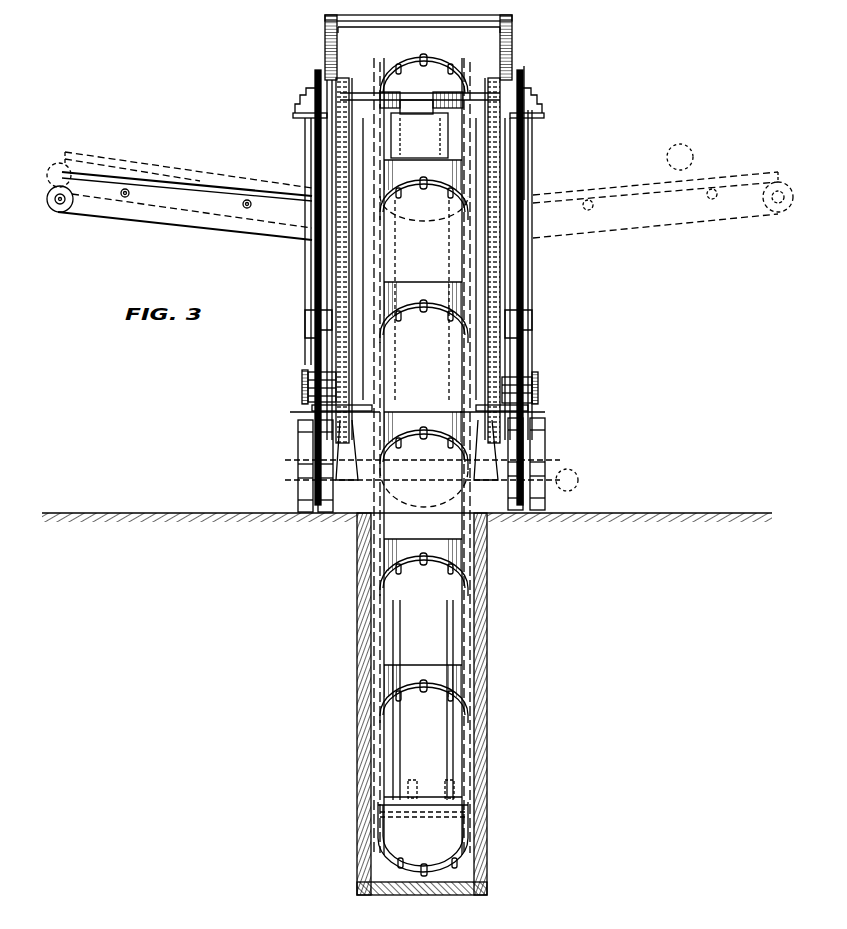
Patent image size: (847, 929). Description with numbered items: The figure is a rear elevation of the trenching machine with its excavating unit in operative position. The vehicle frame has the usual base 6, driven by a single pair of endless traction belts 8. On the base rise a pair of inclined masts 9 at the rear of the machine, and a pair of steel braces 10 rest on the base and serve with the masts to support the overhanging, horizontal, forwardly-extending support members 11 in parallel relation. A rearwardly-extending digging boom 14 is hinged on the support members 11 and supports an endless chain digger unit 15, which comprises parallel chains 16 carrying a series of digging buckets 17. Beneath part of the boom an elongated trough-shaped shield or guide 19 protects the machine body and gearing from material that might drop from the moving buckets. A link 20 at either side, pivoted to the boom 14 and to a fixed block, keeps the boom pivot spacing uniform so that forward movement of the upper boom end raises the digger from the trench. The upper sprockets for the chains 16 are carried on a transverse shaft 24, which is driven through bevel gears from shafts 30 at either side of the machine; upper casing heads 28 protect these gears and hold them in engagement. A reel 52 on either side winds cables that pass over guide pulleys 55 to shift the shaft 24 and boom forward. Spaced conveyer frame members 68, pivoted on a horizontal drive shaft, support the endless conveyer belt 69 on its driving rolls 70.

The base 6 is at (545, 481).
The endless traction belts 8 is at (546, 450).
The inclined masts 9 is at (497, 372).
The steel braces 10 is at (332, 280).
The support members 11 is at (325, 42).
The digging boom 14 is at (445, 735).
The endless chain digger unit 15 is at (475, 598).
The chains 16 is at (375, 620).
The digging buckets 17 is at (470, 557).
The shield or guide 19 is at (470, 282).
The link 20 is at (315, 410).
The transverse shaft 24 is at (420, 96).
The upper casing heads 28 is at (532, 102).
The shafts 30 is at (530, 160).
The reel 52 is at (538, 385).
The guide pulleys 55 is at (526, 78).
The conveyer frame members 68 is at (165, 195).
The conveyer belt 69 is at (170, 228).
The driving rolls 70 is at (48, 206).